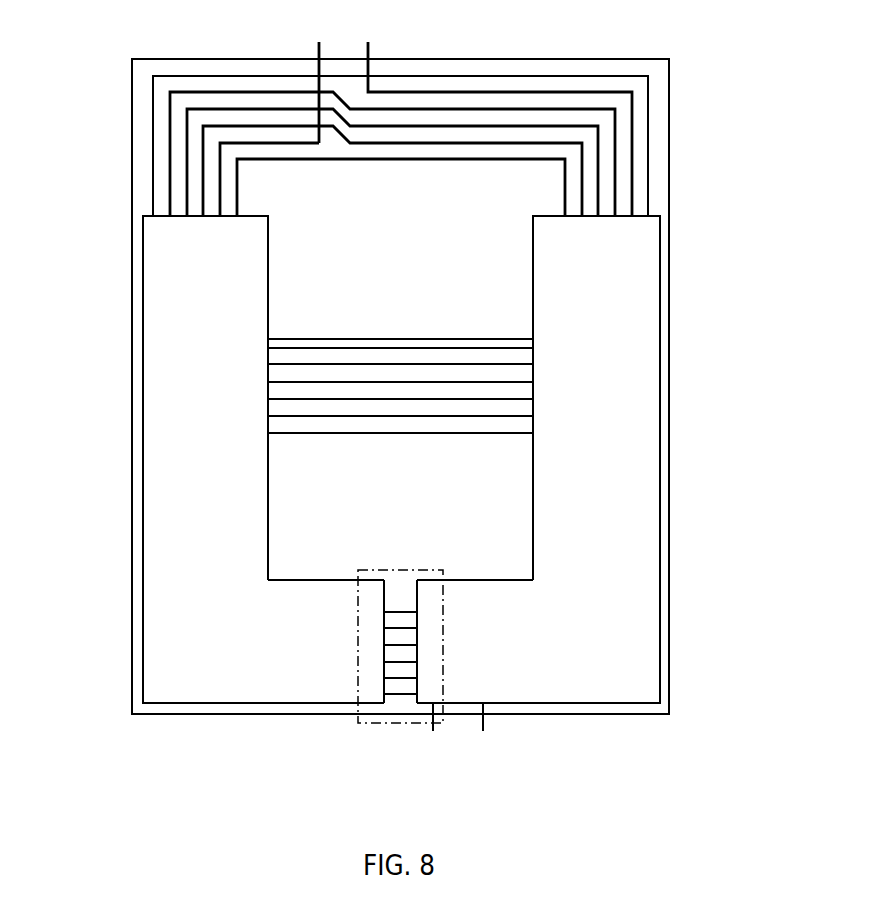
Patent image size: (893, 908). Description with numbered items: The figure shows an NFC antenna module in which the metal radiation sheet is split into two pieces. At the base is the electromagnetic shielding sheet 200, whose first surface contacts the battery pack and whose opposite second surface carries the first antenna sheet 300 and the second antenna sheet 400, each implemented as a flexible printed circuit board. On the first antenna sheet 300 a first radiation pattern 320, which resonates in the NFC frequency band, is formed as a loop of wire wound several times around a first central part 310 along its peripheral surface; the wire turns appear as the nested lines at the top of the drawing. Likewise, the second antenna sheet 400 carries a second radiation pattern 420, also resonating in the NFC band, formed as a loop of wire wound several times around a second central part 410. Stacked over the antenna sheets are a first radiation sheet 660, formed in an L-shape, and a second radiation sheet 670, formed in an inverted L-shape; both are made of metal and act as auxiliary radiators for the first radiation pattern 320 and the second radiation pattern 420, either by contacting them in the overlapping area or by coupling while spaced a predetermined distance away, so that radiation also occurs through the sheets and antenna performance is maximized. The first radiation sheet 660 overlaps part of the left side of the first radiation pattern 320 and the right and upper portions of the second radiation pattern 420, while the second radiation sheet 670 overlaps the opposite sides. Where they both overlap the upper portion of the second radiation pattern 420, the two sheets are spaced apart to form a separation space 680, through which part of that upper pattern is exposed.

The electromagnetic shielding sheet 200 is at (132, 132).
The first antenna sheet 300 is at (439, 108).
The first central part 310 is at (272, 177).
The first radiation pattern 320 is at (632, 143).
The second antenna sheet 400 is at (400, 363).
The second central part 410 is at (517, 506).
The second radiation pattern 420 is at (348, 364).
The first radiation sheet 660 is at (143, 407).
The second radiation sheet 670 is at (660, 388).
The separation space 680 is at (402, 723).